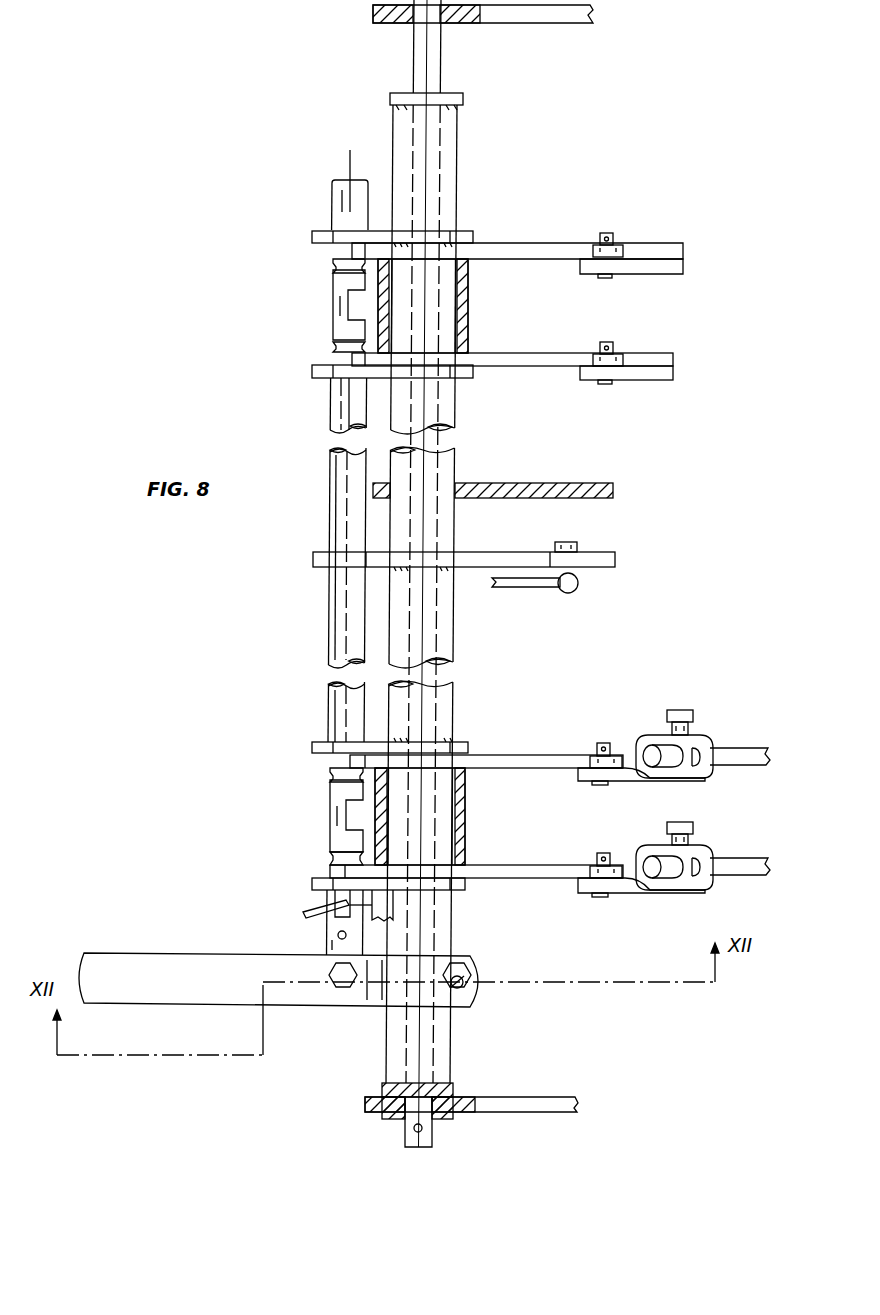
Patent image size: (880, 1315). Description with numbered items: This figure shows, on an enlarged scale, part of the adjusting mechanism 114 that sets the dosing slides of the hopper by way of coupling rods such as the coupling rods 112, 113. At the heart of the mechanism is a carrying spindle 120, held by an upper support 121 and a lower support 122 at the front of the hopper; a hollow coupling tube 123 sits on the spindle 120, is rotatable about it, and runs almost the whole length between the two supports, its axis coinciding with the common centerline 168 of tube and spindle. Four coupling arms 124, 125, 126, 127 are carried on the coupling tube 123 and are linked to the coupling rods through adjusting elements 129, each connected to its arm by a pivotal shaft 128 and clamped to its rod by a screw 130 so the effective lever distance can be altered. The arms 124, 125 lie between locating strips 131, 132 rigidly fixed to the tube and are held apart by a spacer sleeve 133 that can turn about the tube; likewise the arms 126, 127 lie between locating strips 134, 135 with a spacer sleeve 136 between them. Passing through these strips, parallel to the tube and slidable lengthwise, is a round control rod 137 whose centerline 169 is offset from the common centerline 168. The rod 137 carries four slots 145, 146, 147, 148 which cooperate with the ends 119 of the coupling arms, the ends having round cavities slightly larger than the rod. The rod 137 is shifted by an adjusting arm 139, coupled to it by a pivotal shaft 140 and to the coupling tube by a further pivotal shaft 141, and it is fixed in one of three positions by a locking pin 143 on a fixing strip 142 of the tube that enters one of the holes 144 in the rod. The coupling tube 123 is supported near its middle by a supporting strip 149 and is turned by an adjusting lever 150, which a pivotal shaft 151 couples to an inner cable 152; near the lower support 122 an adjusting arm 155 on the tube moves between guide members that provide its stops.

The coupling rod 112 is at (745, 872).
The coupling rod 113 is at (744, 750).
The adjusting mechanism 114 is at (642, 720).
The ends of the coupling arms 119 is at (350, 263).
The carrying spindle 120 is at (436, 70).
The support 121 is at (563, 17).
The support 122 is at (540, 1106).
The coupling tube 123 is at (398, 122).
The coupling arm 124 is at (545, 245).
The coupling arm 125 is at (548, 358).
The coupling arm 126 is at (535, 742).
The coupling arm 127 is at (545, 866).
The pivotal shaft 128 is at (605, 233).
The adjusting element 129 is at (668, 274).
The screw 130 is at (680, 712).
The locating strip 131 is at (318, 234).
The locating strip 132 is at (318, 373).
The spacer sleeve 133 is at (470, 305).
The locating strip 134 is at (325, 748).
The locating strip 135 is at (318, 882).
The spacer sleeve 136 is at (465, 830).
The control rod 137 is at (345, 410).
The adjusting arm 139 is at (138, 938).
The pivotal shaft 140 is at (340, 985).
The pivotal shaft 141 is at (458, 986).
The fixing strip 142 is at (375, 905).
The locking pin 143 is at (335, 908).
The holes 144 is at (335, 898).
The slot 145 is at (353, 280).
The slot 146 is at (348, 328).
The slot 147 is at (348, 805).
The slot 148 is at (343, 845).
The supporting strip 149 is at (595, 483).
The adjusting lever 150 is at (650, 567).
The pivotal shaft 151 is at (568, 542).
The inner cable 152 is at (520, 587).
The adjusting arm 155 is at (385, 1090).
The common centerline 168 is at (425, 40).
The centerline 169 is at (350, 150).